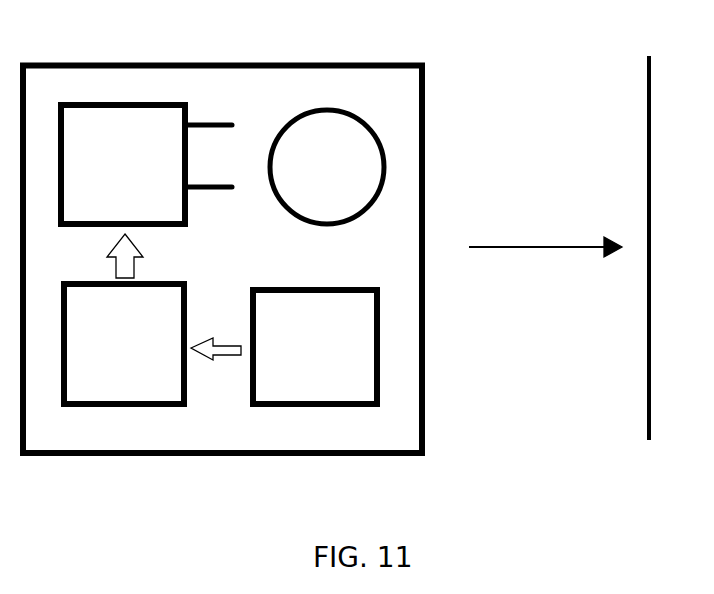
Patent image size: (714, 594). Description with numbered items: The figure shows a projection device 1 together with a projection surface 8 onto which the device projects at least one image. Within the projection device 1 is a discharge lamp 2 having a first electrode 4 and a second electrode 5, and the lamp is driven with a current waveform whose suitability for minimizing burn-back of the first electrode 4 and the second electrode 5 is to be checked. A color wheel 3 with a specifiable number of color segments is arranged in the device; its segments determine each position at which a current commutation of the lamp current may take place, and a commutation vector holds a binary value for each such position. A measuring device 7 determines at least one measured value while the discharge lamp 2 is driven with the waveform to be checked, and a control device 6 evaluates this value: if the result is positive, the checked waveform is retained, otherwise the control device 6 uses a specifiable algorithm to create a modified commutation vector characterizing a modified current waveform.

The projection device 1 is at (83, 63).
The discharge lamp 2 is at (123, 164).
The color wheel 3 is at (327, 167).
The first electrode 4 is at (214, 105).
The second electrode 5 is at (217, 183).
The control device 6 is at (124, 344).
The measuring device 7 is at (315, 347).
The projection surface 8 is at (670, 248).